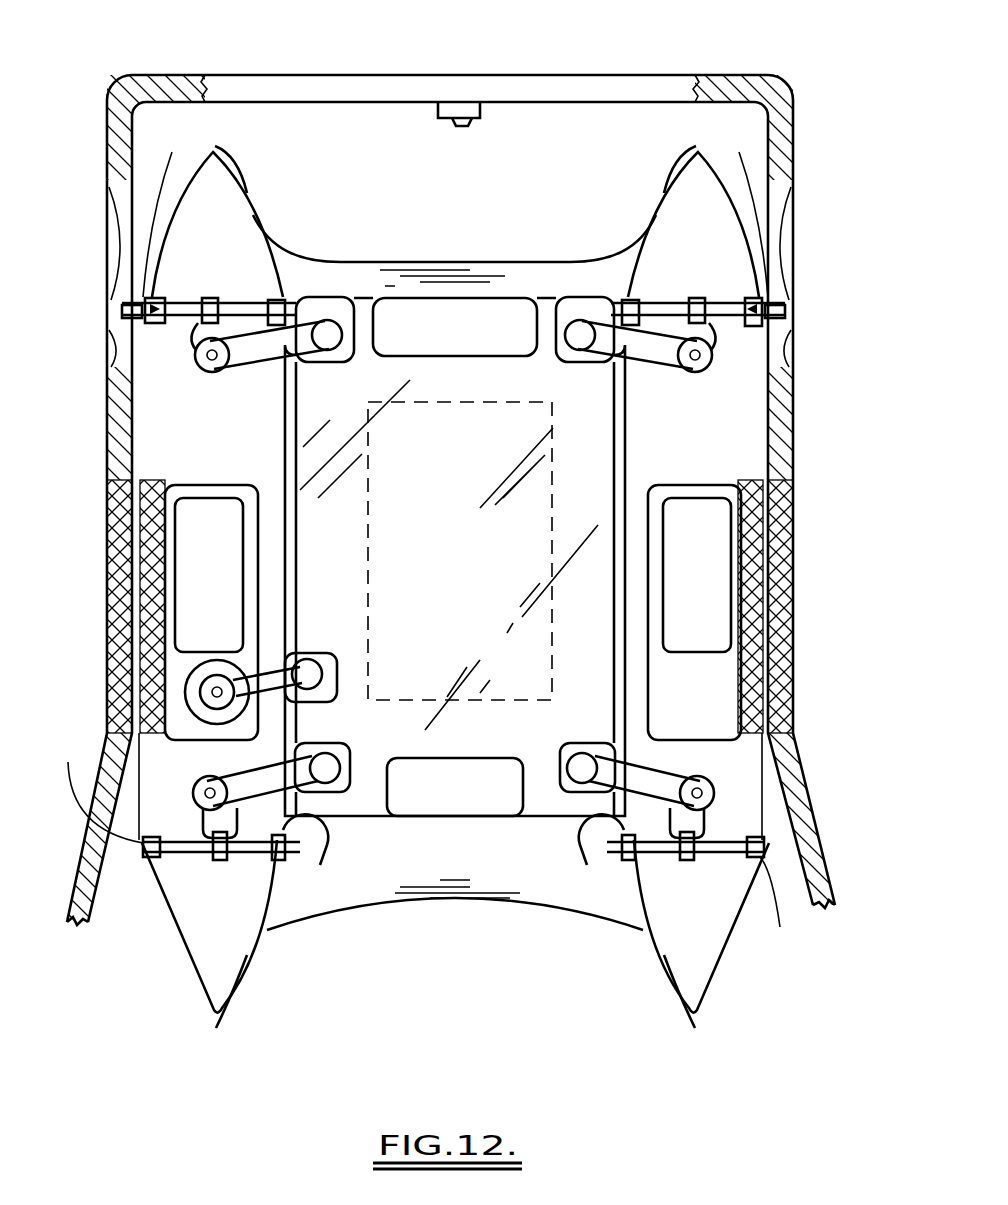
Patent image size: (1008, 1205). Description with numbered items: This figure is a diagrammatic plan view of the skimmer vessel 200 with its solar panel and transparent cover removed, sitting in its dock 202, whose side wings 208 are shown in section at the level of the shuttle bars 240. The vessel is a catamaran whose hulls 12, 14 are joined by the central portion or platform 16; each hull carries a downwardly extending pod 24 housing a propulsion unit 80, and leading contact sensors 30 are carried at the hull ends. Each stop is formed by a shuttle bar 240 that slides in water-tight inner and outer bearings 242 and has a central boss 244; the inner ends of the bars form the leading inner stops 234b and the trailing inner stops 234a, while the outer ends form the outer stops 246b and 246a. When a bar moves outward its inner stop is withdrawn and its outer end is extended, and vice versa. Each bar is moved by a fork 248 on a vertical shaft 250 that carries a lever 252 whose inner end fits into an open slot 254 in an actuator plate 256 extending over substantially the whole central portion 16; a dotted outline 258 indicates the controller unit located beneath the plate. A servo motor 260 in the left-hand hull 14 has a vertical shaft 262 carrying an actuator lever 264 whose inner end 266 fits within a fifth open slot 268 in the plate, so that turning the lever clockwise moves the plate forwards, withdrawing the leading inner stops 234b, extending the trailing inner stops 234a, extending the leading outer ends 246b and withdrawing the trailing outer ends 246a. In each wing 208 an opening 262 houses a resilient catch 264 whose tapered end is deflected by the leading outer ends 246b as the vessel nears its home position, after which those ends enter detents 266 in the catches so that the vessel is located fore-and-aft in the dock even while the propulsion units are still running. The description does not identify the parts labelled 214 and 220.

The vessel 200 is at (520, 960).
The dock 202 is at (683, 60).
The side wings 208 is at (95, 458).
The top wall 214 is at (363, 75).
The latch 220 is at (470, 122).
The hull 12 is at (651, 215).
The hull 14 is at (236, 192).
The central portion 16 is at (462, 255).
The pod 24 is at (200, 487).
The leading contact sensors 30 is at (225, 150).
The propulsion unit 80 is at (193, 613).
The inner trailing stops 234a is at (327, 868).
The leading inner stops 234b is at (356, 310).
The shuttle bar 240 is at (130, 320).
The bearings 242 is at (275, 300).
The central boss 244 is at (207, 298).
The outer ends of trailing bars 246a is at (437, 845).
The outer ends of leading bars 246b is at (172, 165).
The fork 248 is at (200, 360).
The vertical shaft 250 is at (215, 375).
The lever 252 is at (258, 350).
The open slot 254 is at (326, 362).
The actuator plate 256 is at (405, 330).
The dotted outline 258 is at (375, 525).
The servo motor 260 is at (238, 662).
The shaft 262 is at (112, 230).
The actuator lever 264 is at (148, 321).
The inner end 266 is at (125, 308).
The fifth open slot 268 is at (340, 690).